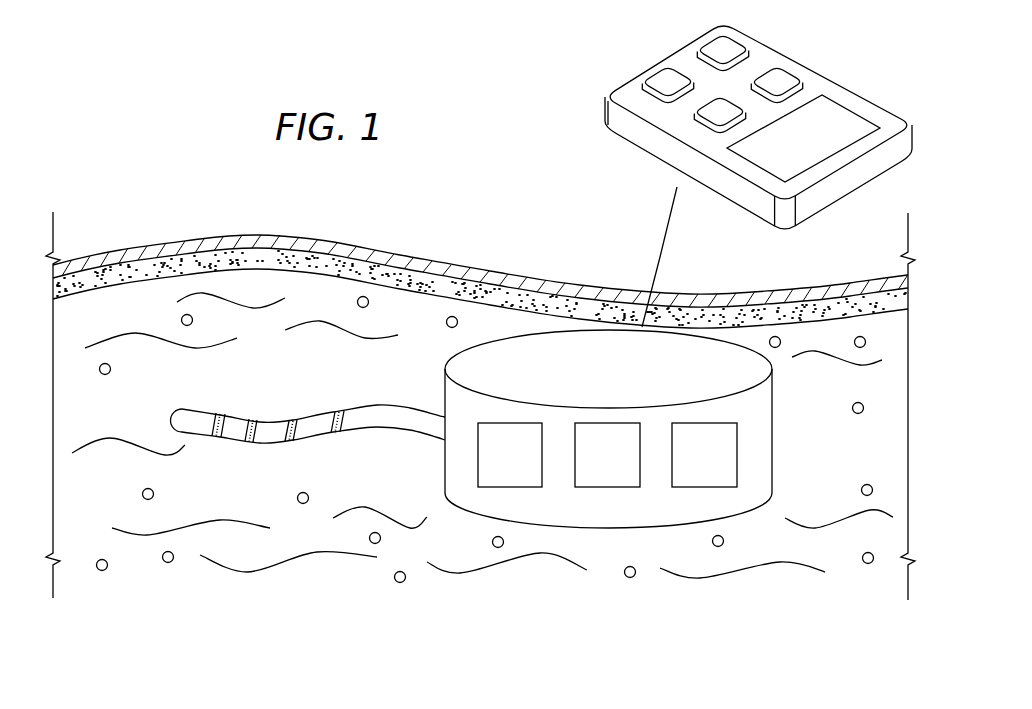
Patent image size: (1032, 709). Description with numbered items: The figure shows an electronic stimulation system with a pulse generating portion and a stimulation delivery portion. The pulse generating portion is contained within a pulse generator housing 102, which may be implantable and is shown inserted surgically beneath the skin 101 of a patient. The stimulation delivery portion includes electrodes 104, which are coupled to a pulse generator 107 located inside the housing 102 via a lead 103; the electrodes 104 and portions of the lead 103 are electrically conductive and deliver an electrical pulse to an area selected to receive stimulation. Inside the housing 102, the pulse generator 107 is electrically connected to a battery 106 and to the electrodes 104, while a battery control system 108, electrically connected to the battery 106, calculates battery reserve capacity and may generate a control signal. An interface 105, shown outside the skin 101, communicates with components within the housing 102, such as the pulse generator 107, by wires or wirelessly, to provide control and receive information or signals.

The skin 101 is at (243, 236).
The pulse generator housing 102 is at (773, 448).
The lead 103 is at (385, 405).
The electrodes 104 is at (219, 414).
The interface 105 is at (821, 76).
The battery 106 is at (529, 470).
The pulse generator 107 is at (626, 470).
The battery control system 108 is at (723, 470).